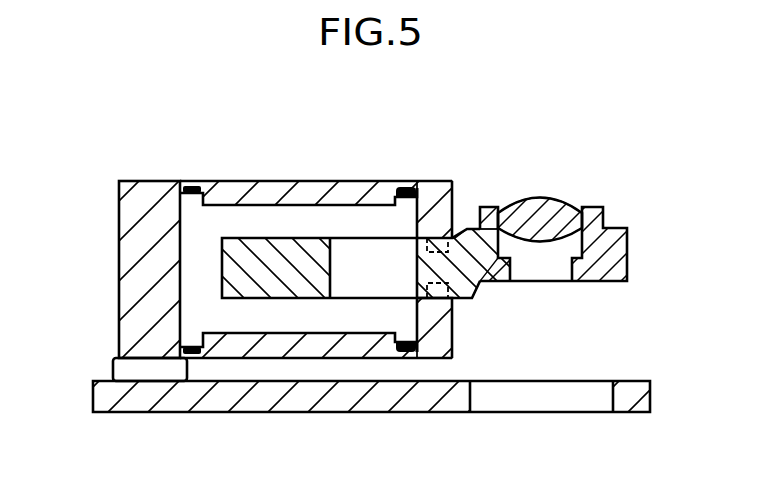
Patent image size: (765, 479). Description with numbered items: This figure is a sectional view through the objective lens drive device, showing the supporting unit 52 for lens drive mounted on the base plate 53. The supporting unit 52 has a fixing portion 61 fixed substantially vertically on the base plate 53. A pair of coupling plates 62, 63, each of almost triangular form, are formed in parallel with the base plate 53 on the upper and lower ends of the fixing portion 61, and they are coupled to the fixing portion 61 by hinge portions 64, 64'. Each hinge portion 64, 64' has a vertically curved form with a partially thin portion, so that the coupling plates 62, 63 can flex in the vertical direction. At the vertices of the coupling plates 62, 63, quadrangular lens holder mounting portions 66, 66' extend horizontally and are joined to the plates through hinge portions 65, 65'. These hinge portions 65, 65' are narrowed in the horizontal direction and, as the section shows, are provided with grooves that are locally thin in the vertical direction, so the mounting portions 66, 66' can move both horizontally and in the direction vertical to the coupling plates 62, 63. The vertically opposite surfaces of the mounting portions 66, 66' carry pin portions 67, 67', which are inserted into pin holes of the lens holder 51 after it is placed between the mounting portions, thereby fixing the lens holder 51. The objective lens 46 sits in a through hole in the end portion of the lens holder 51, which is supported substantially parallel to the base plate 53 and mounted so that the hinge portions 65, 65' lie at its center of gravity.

The supporting unit 52 is at (122, 181).
The fixing portion 61 is at (123, 284).
The coupling plate 62 is at (298, 192).
The coupling plate 63 is at (297, 393).
The hinge portion 64 is at (186, 149).
The hinge portion 64' is at (197, 302).
The hinge portion 65 is at (406, 156).
The hinge portion 65' is at (410, 406).
The lens holder mounting portion 66 is at (445, 177).
The lens holder mounting portion 66' is at (483, 329).
The pin portion 67 is at (472, 229).
The pin portion 67' is at (482, 302).
The lens holder 51 is at (598, 283).
The objective lens 46 is at (563, 200).
The base plate 53 is at (182, 393).